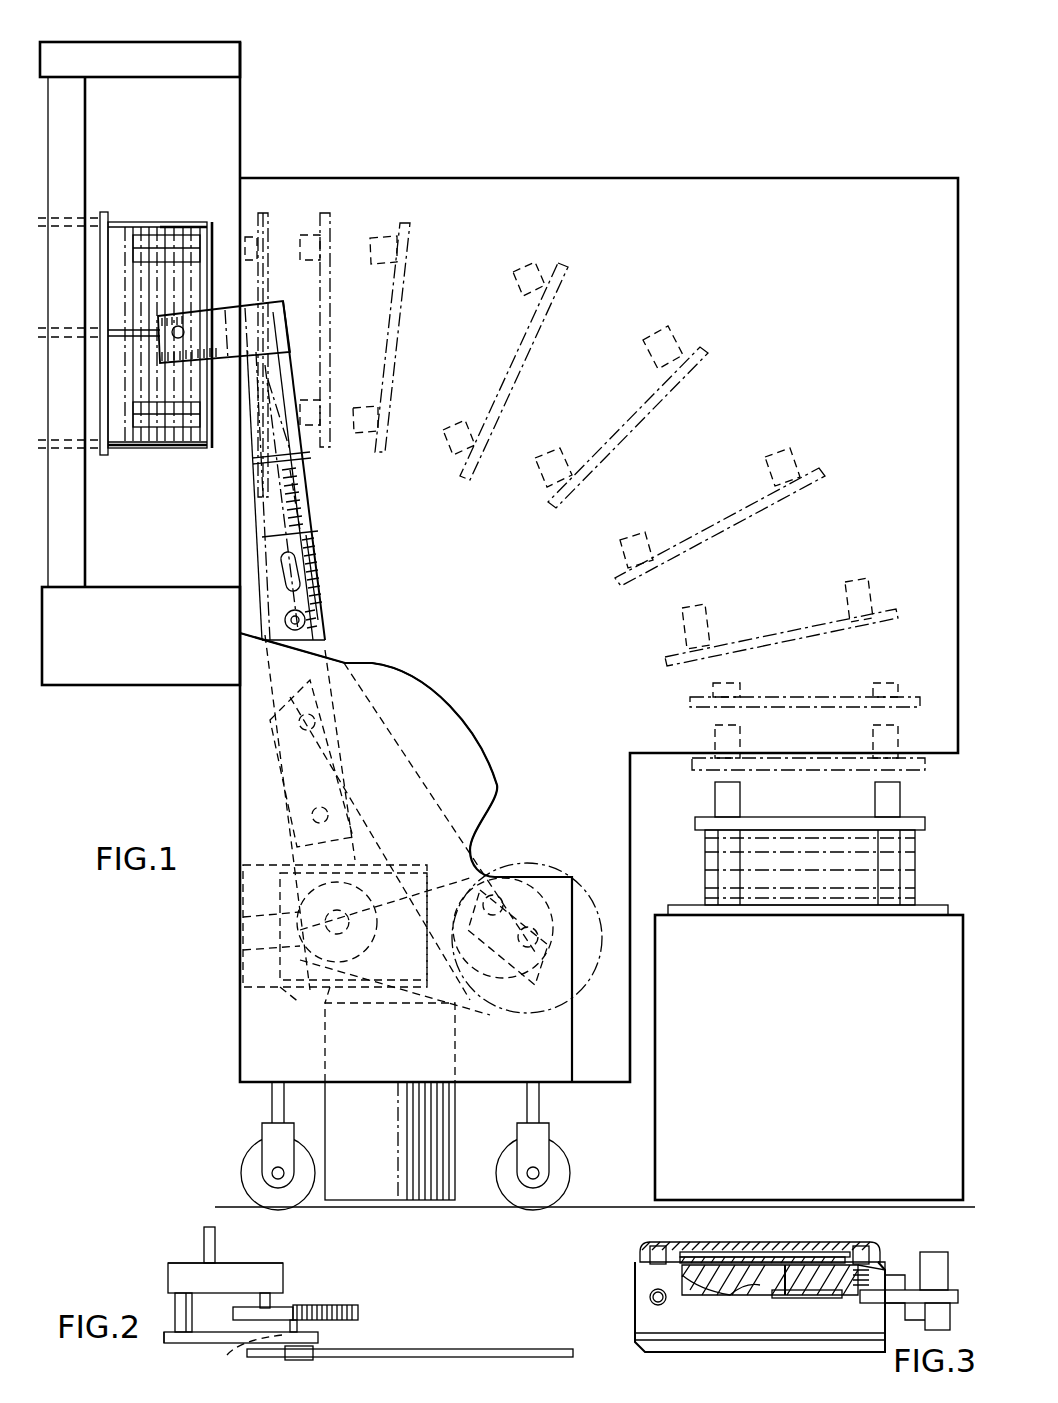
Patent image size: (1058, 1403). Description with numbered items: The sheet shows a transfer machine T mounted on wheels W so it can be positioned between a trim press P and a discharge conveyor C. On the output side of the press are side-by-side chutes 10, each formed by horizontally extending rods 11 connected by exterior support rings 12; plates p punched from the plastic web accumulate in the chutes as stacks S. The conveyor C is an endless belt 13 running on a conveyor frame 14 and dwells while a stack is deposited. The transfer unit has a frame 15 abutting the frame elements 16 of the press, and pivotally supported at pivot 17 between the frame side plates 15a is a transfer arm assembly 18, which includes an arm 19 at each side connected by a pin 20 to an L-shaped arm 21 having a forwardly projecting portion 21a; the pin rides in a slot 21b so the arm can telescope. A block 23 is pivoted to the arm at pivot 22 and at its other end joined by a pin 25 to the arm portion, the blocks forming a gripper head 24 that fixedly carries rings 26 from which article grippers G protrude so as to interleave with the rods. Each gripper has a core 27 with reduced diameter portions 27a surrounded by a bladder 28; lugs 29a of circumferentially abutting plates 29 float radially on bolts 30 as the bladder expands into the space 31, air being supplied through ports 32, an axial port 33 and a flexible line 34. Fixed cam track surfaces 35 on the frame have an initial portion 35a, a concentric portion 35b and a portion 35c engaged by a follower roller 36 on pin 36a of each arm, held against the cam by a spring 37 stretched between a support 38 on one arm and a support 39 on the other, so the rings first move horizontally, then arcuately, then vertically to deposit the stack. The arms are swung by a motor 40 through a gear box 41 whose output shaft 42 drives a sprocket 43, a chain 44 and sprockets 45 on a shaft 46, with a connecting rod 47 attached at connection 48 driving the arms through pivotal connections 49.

In FIG. 1, the trim press P is at (254, 60).
In FIG. 1, the chute 10 is at (160, 288).
In FIG. 1, the rod 11 is at (151, 222).
In FIG. 1, the exterior support ring 12 is at (100, 250).
In FIG. 1, the endless belt 13 is at (860, 915).
In FIG. 1, the conveyor frame 14 is at (830, 1031).
In FIG. 1, the frame 15 is at (234, 757).
In FIG. 1, the frame side plate 15a is at (850, 437).
In FIG. 1, the frame element 16 is at (130, 668).
In FIG. 1, the pivot 17 is at (312, 818).
In FIG. 1, the transfer arm assembly 18 is at (333, 603).
In FIG. 1, the arm 19 is at (318, 562).
In FIG. 2, the arm 19 is at (325, 1305).
In FIG. 1, the pin 20 is at (308, 545).
In FIG. 2, the pin 20 is at (290, 1308).
In FIG. 1, the arm 21 is at (268, 545).
In FIG. 2, the arm 21 is at (205, 1343).
In FIG. 1, the arm portion 21a is at (190, 312).
In FIG. 2, the arm portion 21a is at (165, 1345).
In FIG. 1, the slot 21b is at (283, 575).
In FIG. 2, the slot 21b is at (245, 1355).
In FIG. 1, the pivot 22 is at (272, 320).
In FIG. 2, the pivot 22 is at (258, 1300).
In FIG. 1, the block 23 is at (222, 300).
In FIG. 2, the block 23 is at (283, 1268).
In FIG. 1, the gripper head 24 is at (236, 200).
In FIG. 1, the pin 25 is at (175, 338).
In FIG. 2, the pin 25 is at (175, 1305).
In FIG. 1, the ring 26 is at (520, 355).
In FIG. 2, the ring 26 is at (215, 1252).
In FIG. 3, the ring 26 is at (948, 1255).
In FIG. 3, the core 27 is at (790, 1275).
In FIG. 3, the reduced diameter portion 27a is at (845, 1298).
In FIG. 3, the bladder 28 is at (745, 1243).
In FIG. 3, the plate 29 is at (805, 1243).
In FIG. 3, the lug 29a is at (882, 1255).
In FIG. 3, the bolt 30 is at (862, 1246).
In FIG. 3, the space 31 is at (760, 1257).
In FIG. 3, the port 32 is at (673, 1295).
In FIG. 3, the axial port 33 is at (778, 1298).
In FIG. 3, the flexible line 34 is at (950, 1292).
In FIG. 1, the cam track surface 35 is at (450, 693).
In FIG. 2, the cam track surface 35 is at (404, 1340).
In FIG. 1, the initial cam portion 35a is at (313, 647).
In FIG. 1, the cam surface 35b is at (398, 684).
In FIG. 1, the cam portion 35c is at (498, 812).
In FIG. 1, the follower roller 36 is at (318, 592).
In FIG. 2, the follower roller 36 is at (312, 1358).
In FIG. 1, the pin 36a is at (285, 623).
In FIG. 1, the spring 37 is at (302, 474).
In FIG. 1, the support 38 is at (250, 476).
In FIG. 1, the support 39 is at (300, 522).
In FIG. 1, the motor 40 is at (395, 1152).
In FIG. 1, the gear box 41 is at (312, 985).
In FIG. 1, the output shaft 42 is at (325, 927).
In FIG. 1, the sprocket 43 is at (300, 912).
In FIG. 1, the chain 44 is at (472, 1003).
In FIG. 1, the sprocket 45 is at (600, 972).
In FIG. 1, the shaft 46 is at (500, 948).
In FIG. 1, the connecting rod 47 is at (410, 780).
In FIG. 1, the connection 48 is at (503, 895).
In FIG. 1, the pivotal connection 49 is at (340, 662).
In FIG. 1, the article gripper G is at (166, 236).
In FIG. 3, the article gripper G is at (665, 1238).
In FIG. 1, the stack S is at (124, 392).
In FIG. 1, the plate p is at (150, 292).
In FIG. 1, the transfer machine T is at (408, 648).
In FIG. 1, the discharge conveyor C is at (940, 870).
In FIG. 1, the wheel W is at (248, 1162).